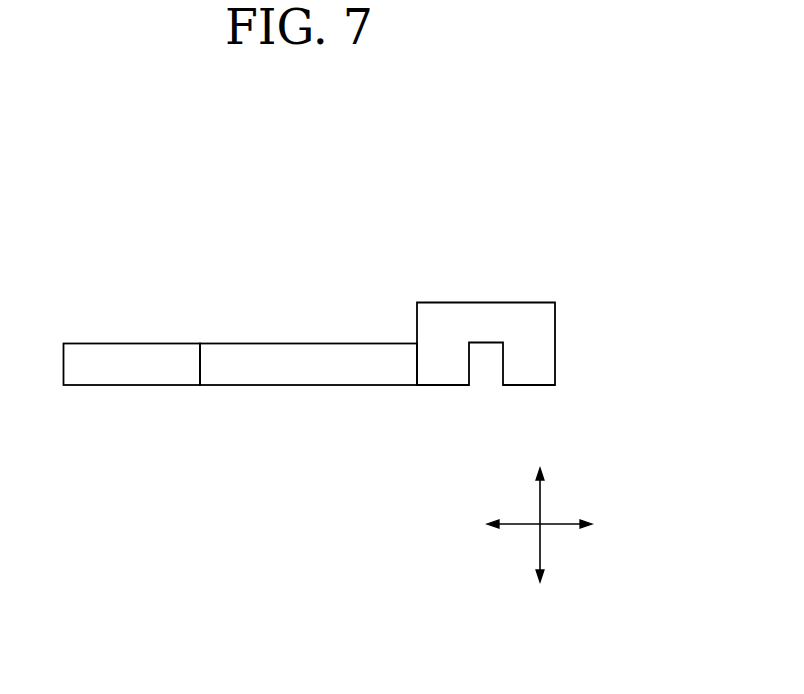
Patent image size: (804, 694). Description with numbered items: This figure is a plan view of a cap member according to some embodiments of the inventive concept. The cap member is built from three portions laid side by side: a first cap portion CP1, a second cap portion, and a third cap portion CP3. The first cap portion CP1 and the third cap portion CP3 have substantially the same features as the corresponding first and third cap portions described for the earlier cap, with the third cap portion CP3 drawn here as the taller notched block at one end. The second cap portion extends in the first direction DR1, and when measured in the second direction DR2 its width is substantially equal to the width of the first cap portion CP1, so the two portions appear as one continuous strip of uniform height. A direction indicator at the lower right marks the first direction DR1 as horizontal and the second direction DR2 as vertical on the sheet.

The first cap portion CP1 is at (311, 353).
The third cap portion CP3 is at (482, 315).
The first direction DR1 is at (560, 528).
The second direction DR2 is at (540, 513).